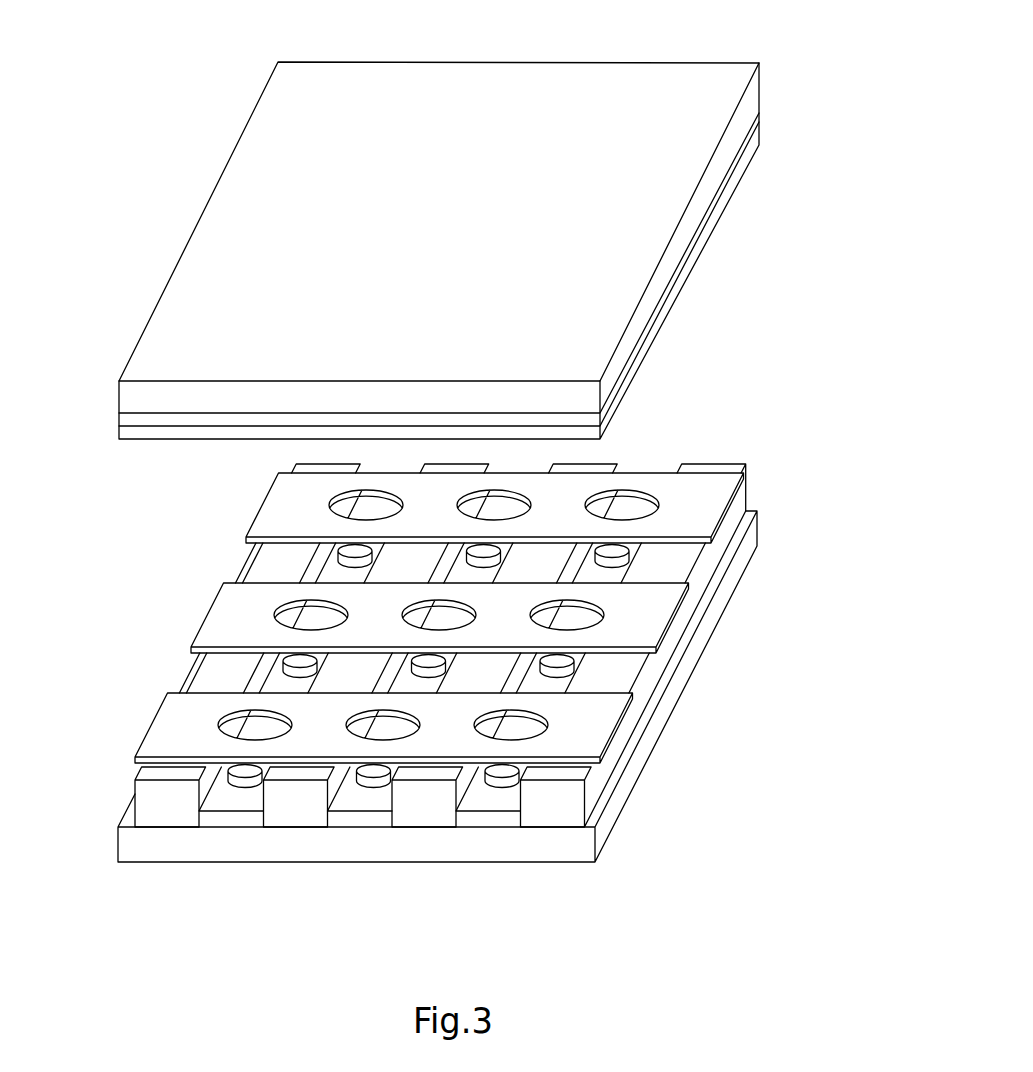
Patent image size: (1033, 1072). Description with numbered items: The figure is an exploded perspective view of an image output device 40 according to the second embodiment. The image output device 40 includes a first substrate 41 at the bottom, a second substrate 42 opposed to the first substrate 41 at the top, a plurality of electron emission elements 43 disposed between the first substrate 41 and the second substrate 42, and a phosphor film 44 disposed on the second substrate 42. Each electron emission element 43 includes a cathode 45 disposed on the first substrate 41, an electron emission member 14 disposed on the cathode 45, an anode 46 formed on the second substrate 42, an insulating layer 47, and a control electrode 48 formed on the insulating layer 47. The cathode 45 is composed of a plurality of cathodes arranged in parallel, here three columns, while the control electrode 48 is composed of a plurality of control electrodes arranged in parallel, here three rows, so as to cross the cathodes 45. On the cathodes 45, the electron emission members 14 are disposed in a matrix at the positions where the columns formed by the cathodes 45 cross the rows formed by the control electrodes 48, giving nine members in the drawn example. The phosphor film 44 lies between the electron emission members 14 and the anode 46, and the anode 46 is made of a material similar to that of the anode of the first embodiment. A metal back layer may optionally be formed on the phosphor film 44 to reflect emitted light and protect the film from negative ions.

The image output device 40 is at (163, 66).
The first substrate 41 is at (663, 735).
The second substrate 42 is at (760, 80).
The electron emission element 43 is at (857, 367).
The phosphor film 44 is at (665, 320).
The cathode 45 is at (208, 822).
The anode 46 is at (762, 121).
The insulating layer 47 is at (150, 822).
The control electrode 48 is at (278, 508).
The electron emission member 14 is at (247, 782).